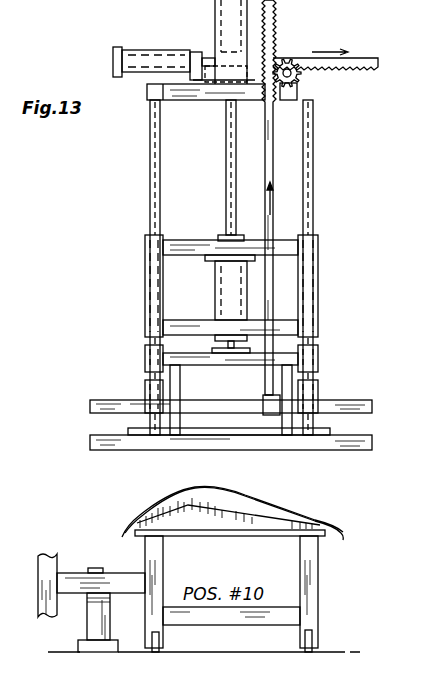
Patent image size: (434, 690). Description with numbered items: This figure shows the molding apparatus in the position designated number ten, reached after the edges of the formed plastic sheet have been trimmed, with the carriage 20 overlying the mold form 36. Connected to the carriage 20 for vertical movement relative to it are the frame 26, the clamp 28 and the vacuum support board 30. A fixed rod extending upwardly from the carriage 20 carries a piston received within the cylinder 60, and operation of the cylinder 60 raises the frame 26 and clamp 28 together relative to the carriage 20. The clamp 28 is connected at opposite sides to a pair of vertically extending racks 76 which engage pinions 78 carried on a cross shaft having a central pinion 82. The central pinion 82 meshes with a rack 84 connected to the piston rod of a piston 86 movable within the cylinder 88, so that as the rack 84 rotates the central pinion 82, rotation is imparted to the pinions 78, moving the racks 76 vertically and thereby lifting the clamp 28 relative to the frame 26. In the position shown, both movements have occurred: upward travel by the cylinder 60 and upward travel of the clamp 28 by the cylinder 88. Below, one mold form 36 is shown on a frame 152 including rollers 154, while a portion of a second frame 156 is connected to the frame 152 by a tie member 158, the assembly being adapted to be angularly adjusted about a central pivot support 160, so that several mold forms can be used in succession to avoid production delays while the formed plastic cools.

The carriage 20 is at (182, 240).
The frame 26 is at (90, 446).
The clamp 28 is at (90, 405).
The vacuum support board 30 is at (226, 435).
The mold form 36 is at (252, 506).
The cylinder 60 is at (214, 22).
The racks 76 is at (280, 166).
The pinions 78 is at (275, 102).
The central pinion 82 is at (305, 80).
The rack 84 is at (362, 58).
The piston 86 is at (173, 50).
The cylinder 88 is at (122, 48).
The frame 152 is at (318, 570).
The rollers 154 is at (312, 630).
The second frame 156 is at (57, 548).
The tie member 158 is at (112, 560).
The central pivot support 160 is at (85, 638).